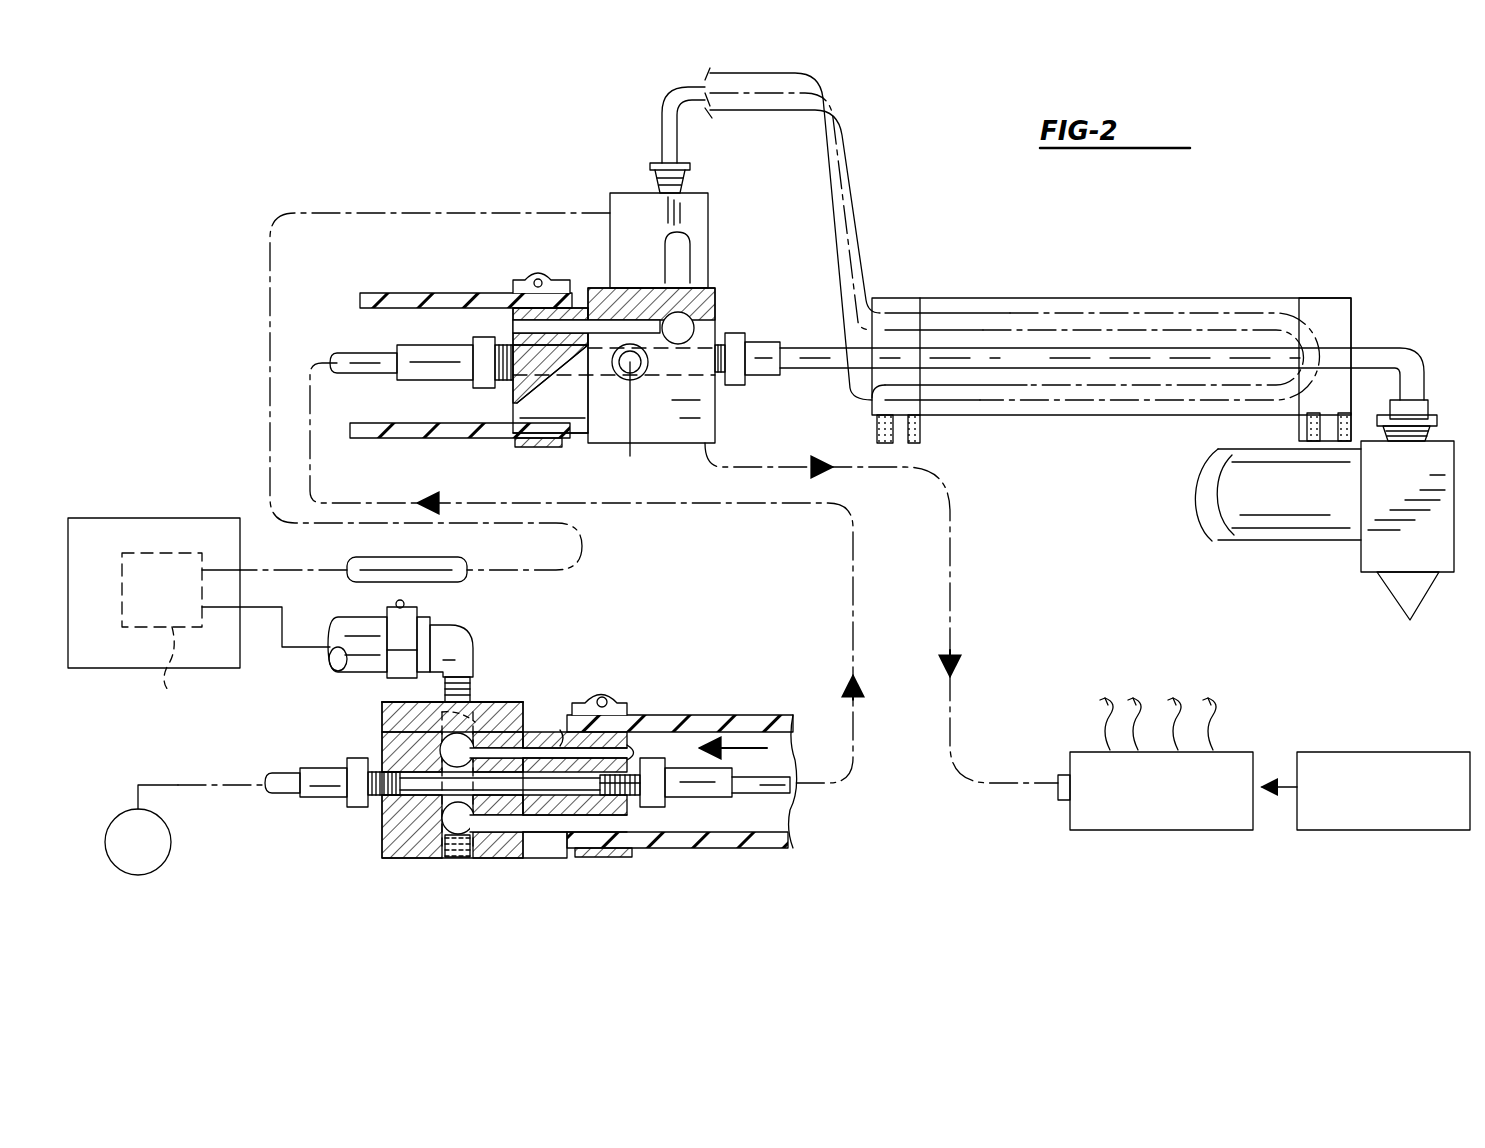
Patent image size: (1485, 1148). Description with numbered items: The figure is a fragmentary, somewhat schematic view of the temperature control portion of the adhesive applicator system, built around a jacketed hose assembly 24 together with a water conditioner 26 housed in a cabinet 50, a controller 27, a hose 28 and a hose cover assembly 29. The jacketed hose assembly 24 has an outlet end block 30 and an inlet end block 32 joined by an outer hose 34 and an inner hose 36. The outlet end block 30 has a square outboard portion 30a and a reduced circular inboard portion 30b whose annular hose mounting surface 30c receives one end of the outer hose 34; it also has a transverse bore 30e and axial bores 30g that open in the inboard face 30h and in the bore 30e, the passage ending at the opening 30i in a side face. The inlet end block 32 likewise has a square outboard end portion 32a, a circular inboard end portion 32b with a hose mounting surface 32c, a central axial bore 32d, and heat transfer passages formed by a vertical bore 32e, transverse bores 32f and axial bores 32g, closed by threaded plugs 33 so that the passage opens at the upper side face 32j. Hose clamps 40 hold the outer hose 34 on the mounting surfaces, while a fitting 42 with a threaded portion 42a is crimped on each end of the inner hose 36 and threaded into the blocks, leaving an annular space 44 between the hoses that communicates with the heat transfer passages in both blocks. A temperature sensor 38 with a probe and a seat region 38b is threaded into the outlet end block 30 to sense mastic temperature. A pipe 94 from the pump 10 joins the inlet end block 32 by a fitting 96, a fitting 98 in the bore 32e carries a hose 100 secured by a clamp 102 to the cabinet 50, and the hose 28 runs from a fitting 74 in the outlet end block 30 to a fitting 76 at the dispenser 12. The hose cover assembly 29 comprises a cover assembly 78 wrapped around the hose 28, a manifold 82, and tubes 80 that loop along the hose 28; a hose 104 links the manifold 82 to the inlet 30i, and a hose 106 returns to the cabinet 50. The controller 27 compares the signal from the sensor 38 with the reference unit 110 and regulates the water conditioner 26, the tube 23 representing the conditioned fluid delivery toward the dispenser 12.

The pump 10 is at (165, 860).
The dispenser 12 is at (1428, 579).
The tube 23 is at (1266, 516).
The jacketed hose assembly 24 is at (870, 762).
The water conditioner 26 is at (181, 669).
The controller 27 is at (1192, 830).
The hose 28 is at (642, 366).
The hose cover assembly 29 is at (1137, 294).
The outlet end block 30 is at (720, 283).
The outboard portion 30a is at (702, 467).
The inboard portion 30b is at (537, 443).
The annular hose mounting surface 30c is at (582, 433).
The transverse bore 30e is at (675, 317).
The axial bores 30g is at (510, 327).
The inboard face 30h is at (510, 393).
The opening 30i is at (713, 310).
The inlet end block 32 is at (348, 820).
The outboard end portion 32a is at (395, 698).
The inboard end portion 32b is at (548, 836).
The annular hose mounting surface 32c is at (556, 730).
The central through axial bore 32d is at (424, 777).
The vertical through bore 32e is at (447, 712).
The transverse bores 32f is at (437, 827).
The axial bores 32g is at (562, 728).
The upper side face 32j is at (472, 700).
The threaded plugs 33 is at (460, 855).
The outer hose 34 is at (367, 293).
The inner hose 36 is at (790, 847).
The temperature sensor 38 is at (622, 377).
The ball seat 38b is at (628, 455).
The hose clamps 40 is at (520, 278).
The fitting 42 is at (417, 368).
The threaded portion 42a is at (632, 802).
The annular space 44 is at (382, 332).
The cabinet 50 is at (132, 518).
The fitting 74 is at (740, 384).
The fitting 76 is at (1439, 404).
The cover assembly 78 is at (1281, 294).
The tubes 80 is at (663, 128).
The manifold 82 is at (610, 213).
The pipe 94 is at (178, 783).
The fitting 96 is at (306, 790).
The fitting 98 is at (478, 650).
The hose 100 is at (370, 622).
The clamp 102 is at (435, 622).
The hose 104 is at (690, 250).
The hose 106 is at (373, 557).
The reference unit 110 is at (1347, 750).